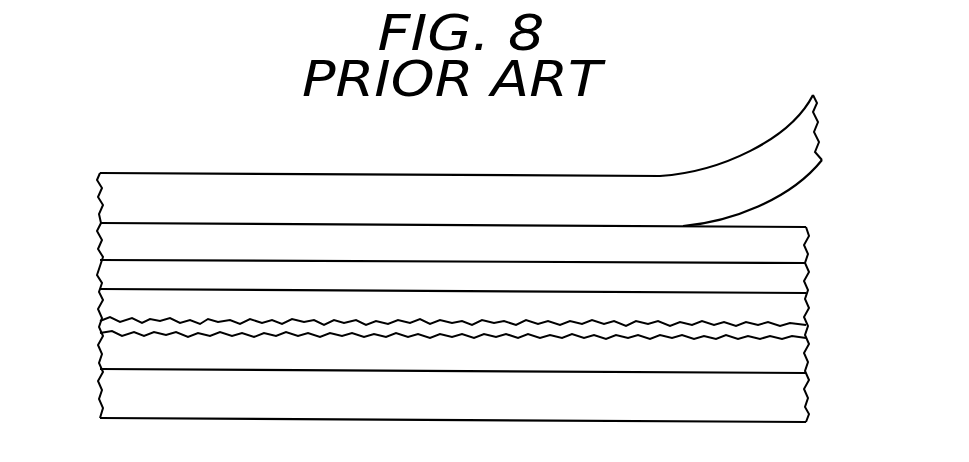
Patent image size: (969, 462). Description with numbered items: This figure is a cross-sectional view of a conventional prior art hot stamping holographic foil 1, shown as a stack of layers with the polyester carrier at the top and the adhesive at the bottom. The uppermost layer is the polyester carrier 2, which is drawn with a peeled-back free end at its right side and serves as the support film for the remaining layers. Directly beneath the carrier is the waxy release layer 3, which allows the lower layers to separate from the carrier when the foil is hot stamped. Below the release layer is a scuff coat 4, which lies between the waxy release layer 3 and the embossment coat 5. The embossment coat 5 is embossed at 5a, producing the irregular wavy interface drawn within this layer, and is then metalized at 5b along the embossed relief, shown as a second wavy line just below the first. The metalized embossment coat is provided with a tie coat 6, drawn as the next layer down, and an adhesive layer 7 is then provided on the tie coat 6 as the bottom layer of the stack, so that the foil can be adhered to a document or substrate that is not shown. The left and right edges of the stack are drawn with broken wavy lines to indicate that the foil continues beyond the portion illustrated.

The hot stamping holographic foil 1 is at (228, 158).
The polyester carrier 2 is at (110, 197).
The waxy release layer 3 is at (110, 243).
The scuff coat 4 is at (797, 279).
The embossment coat 5 is at (494, 342).
The embossed surface 5a is at (808, 335).
The metalized surface 5b is at (808, 350).
The tie coat 6 is at (110, 352).
The adhesive layer 7 is at (110, 395).